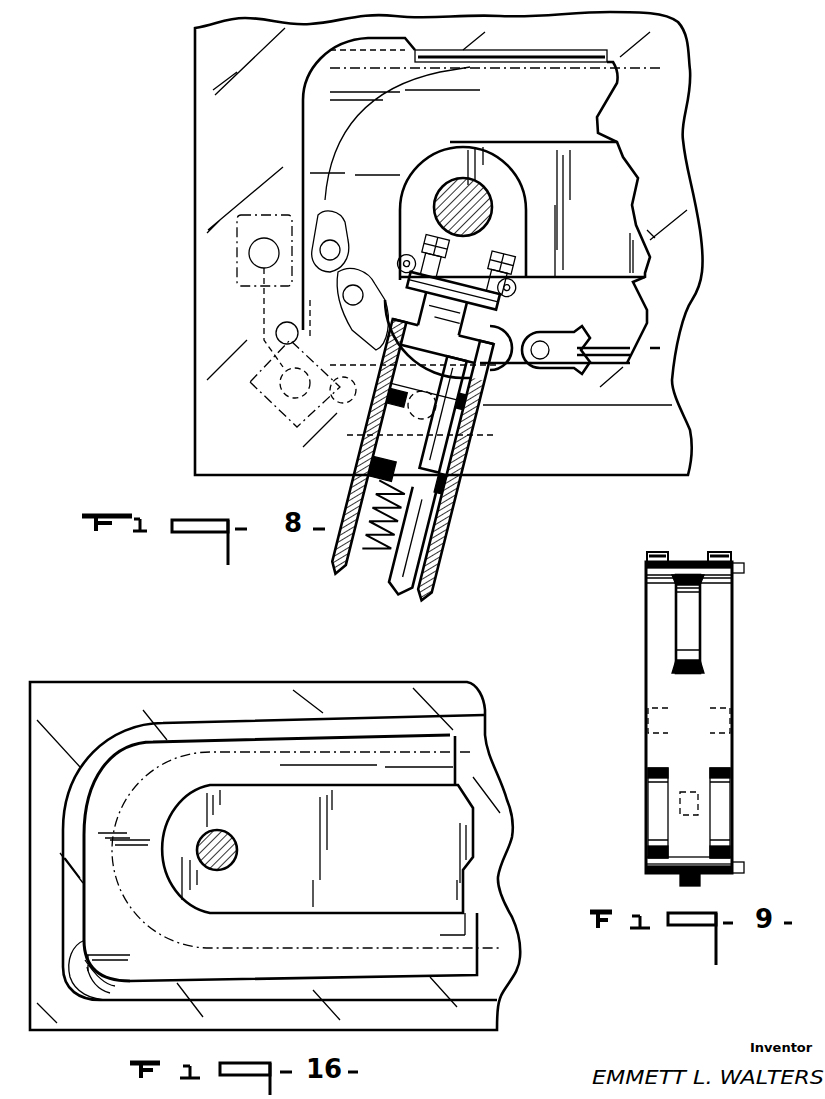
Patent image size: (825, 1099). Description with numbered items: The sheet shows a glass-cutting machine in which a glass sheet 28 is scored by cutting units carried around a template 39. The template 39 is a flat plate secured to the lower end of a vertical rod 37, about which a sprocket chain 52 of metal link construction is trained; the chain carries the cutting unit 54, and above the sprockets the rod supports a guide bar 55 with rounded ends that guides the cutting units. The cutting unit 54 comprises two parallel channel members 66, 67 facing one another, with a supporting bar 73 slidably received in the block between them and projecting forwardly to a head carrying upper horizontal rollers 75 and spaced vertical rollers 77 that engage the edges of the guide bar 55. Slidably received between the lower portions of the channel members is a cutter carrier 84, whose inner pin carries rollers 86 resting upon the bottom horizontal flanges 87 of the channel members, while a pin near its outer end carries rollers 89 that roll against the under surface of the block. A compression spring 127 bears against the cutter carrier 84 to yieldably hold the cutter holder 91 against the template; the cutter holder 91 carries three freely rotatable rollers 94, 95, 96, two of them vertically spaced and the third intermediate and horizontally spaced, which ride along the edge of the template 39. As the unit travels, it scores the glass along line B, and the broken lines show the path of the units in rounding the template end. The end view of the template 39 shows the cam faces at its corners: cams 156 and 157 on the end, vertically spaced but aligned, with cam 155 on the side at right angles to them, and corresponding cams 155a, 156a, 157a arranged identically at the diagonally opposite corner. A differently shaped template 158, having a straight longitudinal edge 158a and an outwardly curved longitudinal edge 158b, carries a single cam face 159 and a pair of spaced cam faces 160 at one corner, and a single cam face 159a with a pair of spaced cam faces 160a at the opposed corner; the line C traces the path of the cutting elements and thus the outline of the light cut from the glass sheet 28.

In FIG. 8, the glass sheet 28 is at (668, 180).
In FIG. 16, the glass sheet 28 is at (283, 686).
In FIG. 8, the vertical rod 37 is at (480, 192).
In FIG. 16, the vertical rod 37 is at (227, 840).
In FIG. 8, the template 39 is at (517, 77).
In FIG. 9, the template 39 is at (657, 657).
In FIG. 8, the sprocket chain 52 is at (566, 342).
In FIG. 8, the cutting unit 54 is at (483, 452).
In FIG. 8, the guide bar 55 is at (598, 162).
In FIG. 16, the guide bar 55 is at (452, 800).
In FIG. 8, the channel member 66 is at (341, 441).
In FIG. 8, the channel member 67 is at (476, 477).
In FIG. 8, the supporting bar 73 is at (464, 325).
In FIG. 8, the upper horizontal rollers 75 is at (465, 263).
In FIG. 8, the vertical rollers 77 is at (465, 270).
In FIG. 8, the cutter carrier 84 is at (474, 425).
In FIG. 8, the rollers 86 is at (424, 369).
In FIG. 8, the bottom horizontal flanges 87 is at (387, 539).
In FIG. 8, the rollers 89 is at (396, 474).
In FIG. 8, the cutter holder 91 is at (220, 272).
In FIG. 8, the compression spring 127 is at (373, 527).
In FIG. 8, the score line B is at (612, 418).
In FIG. 9, the roller 94 is at (725, 712).
In FIG. 9, the roller 95 is at (648, 718).
In FIG. 9, the roller 96 is at (689, 792).
In FIG. 9, the cam face 155 is at (680, 880).
In FIG. 9, the cam face 155a is at (700, 625).
In FIG. 9, the cam face 156 is at (725, 808).
In FIG. 9, the cam face 156a is at (718, 552).
In FIG. 9, the cam face 157 is at (655, 808).
In FIG. 9, the cam face 157a is at (659, 552).
In FIG. 16, the template 158 is at (375, 975).
In FIG. 16, the straight longitudinal edge 158a is at (282, 983).
In FIG. 16, the outwardly curved longitudinal edge 158b is at (372, 735).
In FIG. 16, the cam face 159 is at (105, 992).
In FIG. 16, the cam face 159a is at (80, 790).
In FIG. 16, the cam faces 160 is at (75, 960).
In FIG. 16, the cam faces 160a is at (112, 748).
In FIG. 16, the path of travel C is at (200, 716).